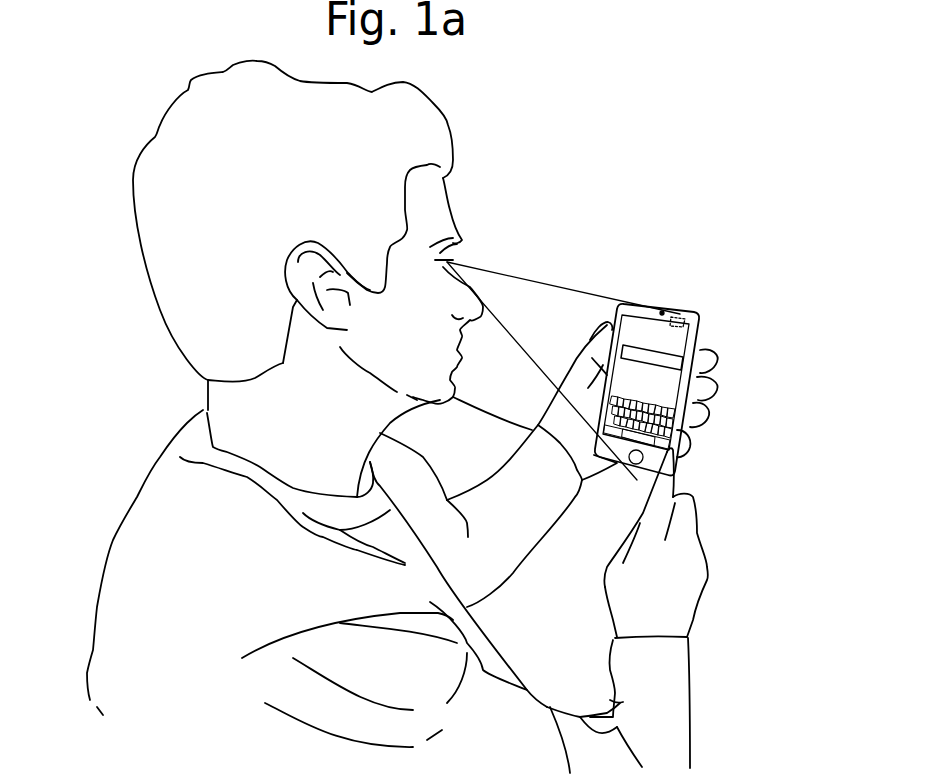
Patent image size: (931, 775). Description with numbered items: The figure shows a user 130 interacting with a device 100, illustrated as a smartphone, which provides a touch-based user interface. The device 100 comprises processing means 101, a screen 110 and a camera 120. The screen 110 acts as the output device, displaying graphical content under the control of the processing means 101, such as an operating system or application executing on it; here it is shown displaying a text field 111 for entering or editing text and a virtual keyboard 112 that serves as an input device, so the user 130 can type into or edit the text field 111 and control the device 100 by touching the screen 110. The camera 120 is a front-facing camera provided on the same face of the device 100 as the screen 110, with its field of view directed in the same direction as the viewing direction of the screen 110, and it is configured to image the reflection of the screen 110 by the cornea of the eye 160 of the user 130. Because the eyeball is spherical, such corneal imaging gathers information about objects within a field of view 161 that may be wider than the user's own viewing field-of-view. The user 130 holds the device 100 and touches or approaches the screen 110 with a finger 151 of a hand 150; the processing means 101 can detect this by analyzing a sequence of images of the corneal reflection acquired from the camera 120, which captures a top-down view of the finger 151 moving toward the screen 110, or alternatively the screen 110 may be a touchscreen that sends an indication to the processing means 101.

The device 100 is at (705, 300).
The processing means 101 is at (680, 313).
The screen 110 is at (680, 335).
The text field 111 is at (683, 363).
The virtual keyboard 112 is at (657, 423).
The camera 120 is at (662, 313).
The user 130 is at (175, 512).
The hand 150 is at (680, 600).
The finger 151 is at (667, 475).
The eye 160 is at (457, 257).
The field of view 161 is at (558, 282).